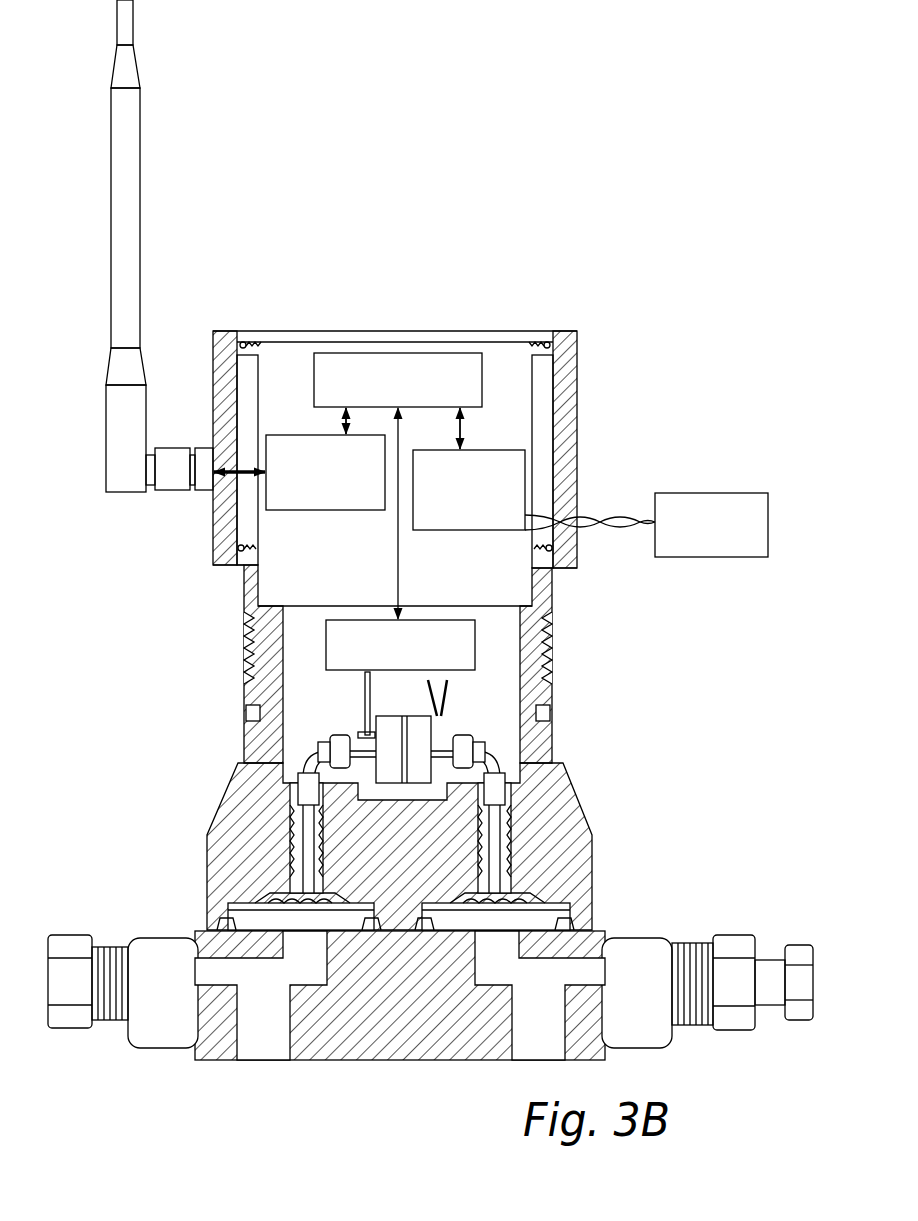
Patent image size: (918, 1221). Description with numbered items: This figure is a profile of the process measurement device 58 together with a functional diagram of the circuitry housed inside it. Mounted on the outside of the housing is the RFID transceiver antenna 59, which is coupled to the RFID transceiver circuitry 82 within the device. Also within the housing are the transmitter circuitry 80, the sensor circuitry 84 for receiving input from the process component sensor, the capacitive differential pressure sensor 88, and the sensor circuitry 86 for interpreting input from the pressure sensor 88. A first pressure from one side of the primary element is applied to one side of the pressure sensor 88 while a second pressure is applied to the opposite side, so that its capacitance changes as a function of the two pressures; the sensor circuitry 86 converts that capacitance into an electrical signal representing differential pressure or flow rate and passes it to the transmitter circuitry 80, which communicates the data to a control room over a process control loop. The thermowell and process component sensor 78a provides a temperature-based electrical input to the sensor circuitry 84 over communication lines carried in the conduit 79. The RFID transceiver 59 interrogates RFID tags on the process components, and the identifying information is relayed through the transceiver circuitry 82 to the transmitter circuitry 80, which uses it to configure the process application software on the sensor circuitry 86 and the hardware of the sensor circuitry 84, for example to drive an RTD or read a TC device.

The process measurement device 58 is at (645, 355).
The RFID transceiver antenna 59 is at (135, 222).
The transmitter circuitry 80 is at (484, 378).
The RFID transceiver circuitry 82 is at (303, 434).
The sensor circuitry 84 is at (523, 500).
The sensor circuitry 86 is at (478, 648).
The capacitive differential pressure sensor 88 is at (447, 718).
The thermowell and process component sensor 78a is at (705, 493).
The conduit 79 is at (612, 548).